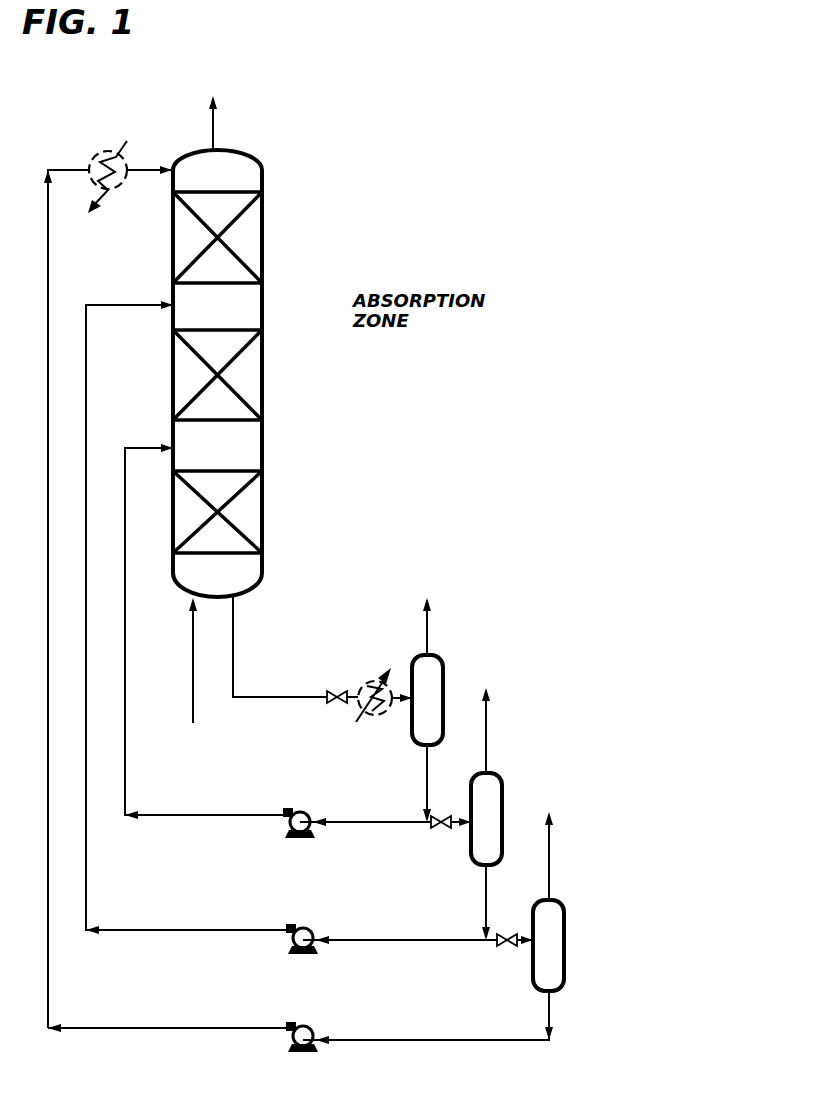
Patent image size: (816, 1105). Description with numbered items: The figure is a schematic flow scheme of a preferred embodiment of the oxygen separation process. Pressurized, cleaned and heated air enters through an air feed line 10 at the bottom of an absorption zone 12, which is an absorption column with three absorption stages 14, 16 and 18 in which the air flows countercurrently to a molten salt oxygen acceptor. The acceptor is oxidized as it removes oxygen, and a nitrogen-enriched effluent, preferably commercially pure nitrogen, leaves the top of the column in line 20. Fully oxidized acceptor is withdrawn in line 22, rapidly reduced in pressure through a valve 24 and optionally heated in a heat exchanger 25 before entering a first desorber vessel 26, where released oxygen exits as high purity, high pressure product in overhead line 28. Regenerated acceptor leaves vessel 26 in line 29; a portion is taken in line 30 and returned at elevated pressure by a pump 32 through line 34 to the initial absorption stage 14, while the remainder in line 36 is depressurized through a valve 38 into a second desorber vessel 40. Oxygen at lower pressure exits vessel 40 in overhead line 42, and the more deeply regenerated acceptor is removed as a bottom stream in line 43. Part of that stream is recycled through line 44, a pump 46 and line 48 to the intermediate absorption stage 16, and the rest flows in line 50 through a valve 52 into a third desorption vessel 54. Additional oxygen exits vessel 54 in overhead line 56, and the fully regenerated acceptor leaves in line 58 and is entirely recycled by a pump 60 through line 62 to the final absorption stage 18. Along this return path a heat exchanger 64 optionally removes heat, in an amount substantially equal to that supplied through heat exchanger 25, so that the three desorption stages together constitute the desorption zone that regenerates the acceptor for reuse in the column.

The air feed line 10 is at (190, 628).
The absorption zone 12 is at (268, 310).
The absorption stage 14 is at (268, 513).
The absorption stage 16 is at (268, 380).
The absorption stage 18 is at (268, 238).
The nitrogen-enriched effluent line 20 is at (216, 126).
The oxidized acceptor line 22 is at (240, 640).
The valve 24 is at (336, 690).
The heat exchanger 25 is at (382, 714).
The desorber vessel 26 is at (446, 680).
The overhead line 28 is at (430, 628).
The regenerated acceptor line 29 is at (424, 780).
The line 30 is at (386, 832).
The pump 32 is at (301, 838).
The line 34 is at (206, 815).
The line 36 is at (427, 834).
The valve 38 is at (440, 816).
The desorber vessel 40 is at (504, 808).
The overhead line 42 is at (490, 730).
The bottom stream line 43 is at (484, 897).
The line 44 is at (406, 948).
The pump 46 is at (308, 955).
The line 48 is at (218, 948).
The line 50 is at (495, 950).
The valve 52 is at (506, 934).
The desorption vessel 54 is at (566, 948).
The overhead line 56 is at (553, 866).
The line 58 is at (406, 1048).
The pump 60 is at (311, 1054).
The line 62 is at (156, 1033).
The heat exchanger 64 is at (122, 186).